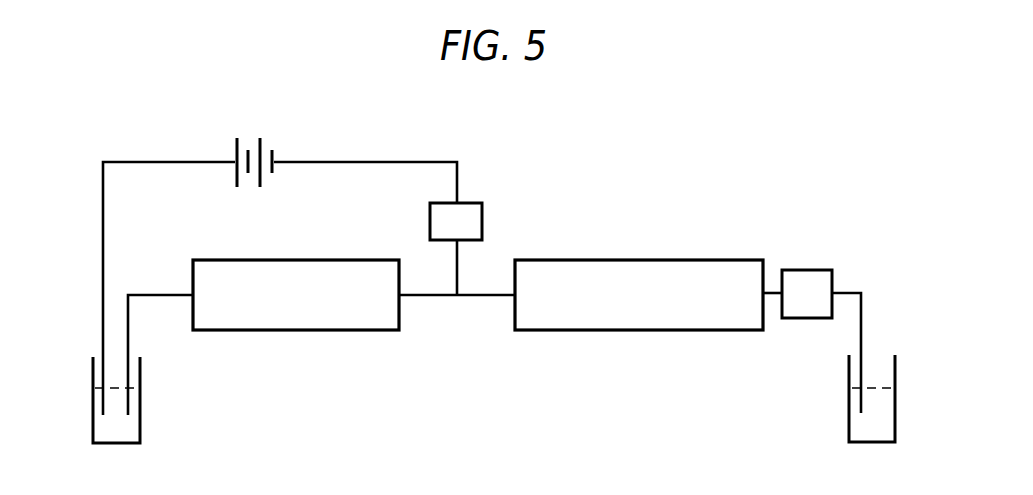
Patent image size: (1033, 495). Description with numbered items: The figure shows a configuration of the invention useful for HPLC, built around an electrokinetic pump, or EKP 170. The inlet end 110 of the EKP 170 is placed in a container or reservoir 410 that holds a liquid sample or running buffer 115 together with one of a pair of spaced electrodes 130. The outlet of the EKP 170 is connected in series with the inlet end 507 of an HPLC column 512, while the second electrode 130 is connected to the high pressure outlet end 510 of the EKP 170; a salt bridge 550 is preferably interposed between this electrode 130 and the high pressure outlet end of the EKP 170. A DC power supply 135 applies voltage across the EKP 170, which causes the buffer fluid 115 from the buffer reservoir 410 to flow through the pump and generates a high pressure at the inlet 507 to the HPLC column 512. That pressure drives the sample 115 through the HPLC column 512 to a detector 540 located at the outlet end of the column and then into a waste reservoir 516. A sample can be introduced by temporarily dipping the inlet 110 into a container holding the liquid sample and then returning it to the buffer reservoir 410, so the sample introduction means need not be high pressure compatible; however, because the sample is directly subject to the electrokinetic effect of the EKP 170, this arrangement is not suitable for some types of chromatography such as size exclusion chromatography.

The inlet end 110 is at (128, 325).
The liquid sample or running buffer 115 is at (98, 432).
The spaced electrodes 130 is at (102, 223).
The DC power supply 135 is at (262, 145).
The EKP 170 is at (396, 285).
The container or reservoir 410 is at (140, 415).
The inlet end of HPLC column 507 is at (487, 295).
The high pressure outlet end 510 is at (428, 295).
The HPLC column 512 is at (760, 283).
The waste reservoir 516 is at (848, 420).
The detector 540 is at (828, 303).
The salt bridge 550 is at (477, 231).